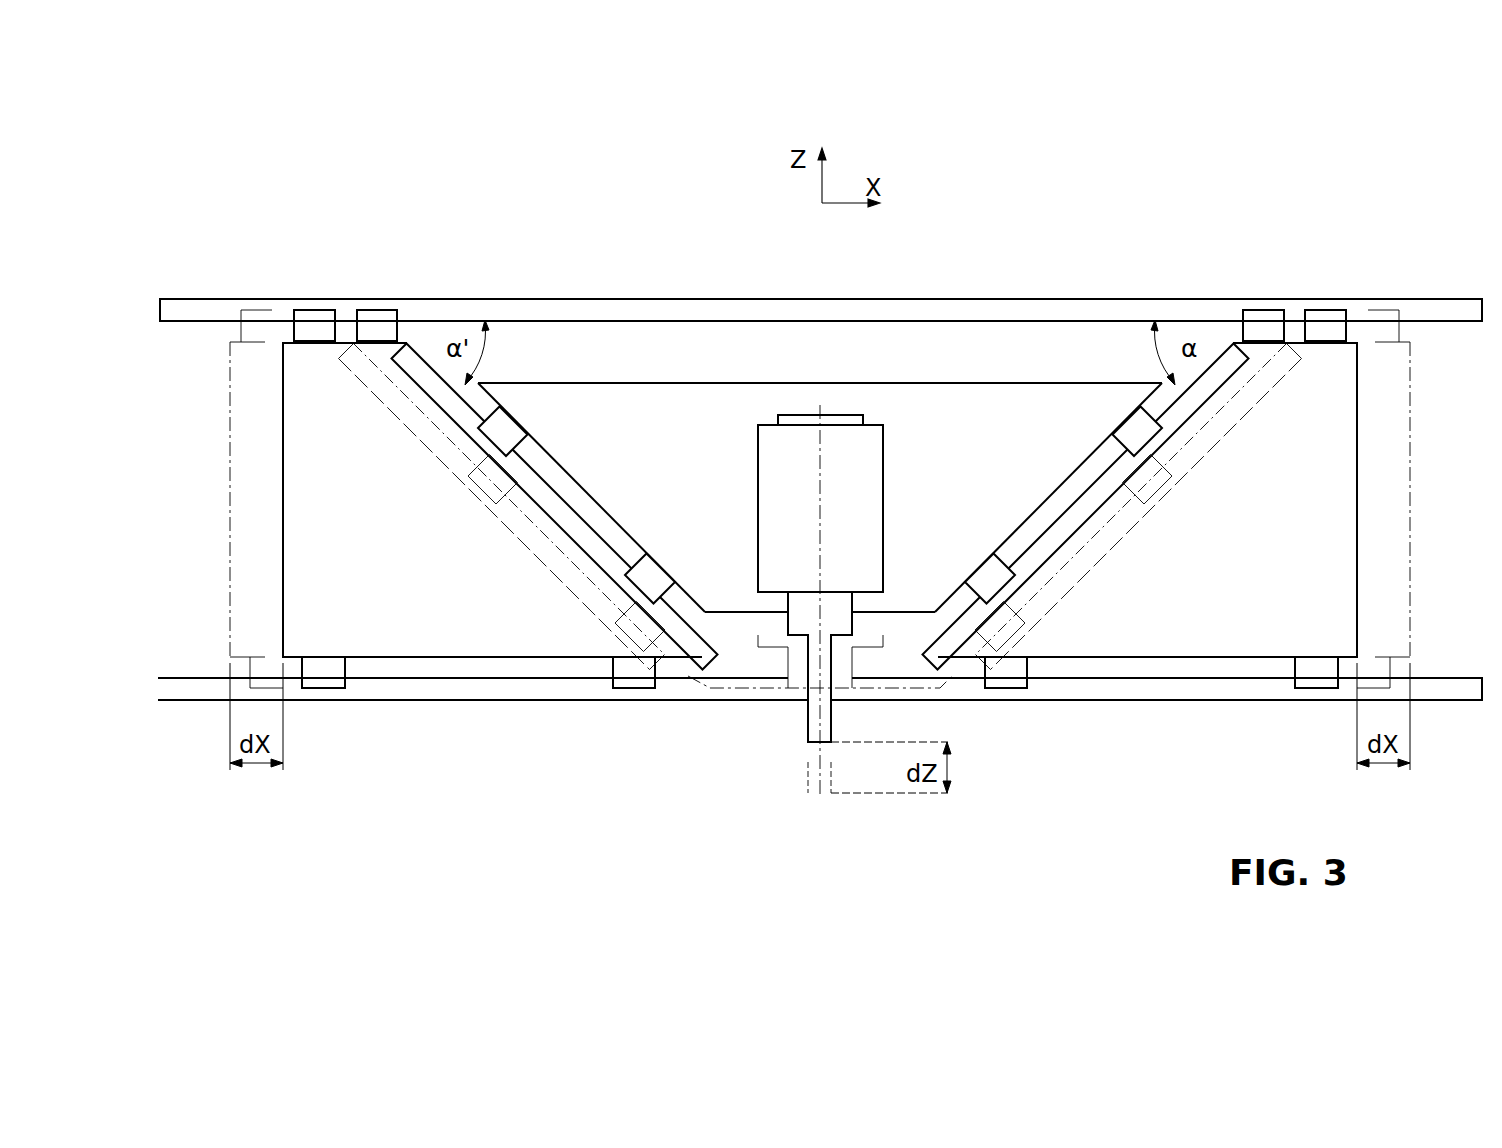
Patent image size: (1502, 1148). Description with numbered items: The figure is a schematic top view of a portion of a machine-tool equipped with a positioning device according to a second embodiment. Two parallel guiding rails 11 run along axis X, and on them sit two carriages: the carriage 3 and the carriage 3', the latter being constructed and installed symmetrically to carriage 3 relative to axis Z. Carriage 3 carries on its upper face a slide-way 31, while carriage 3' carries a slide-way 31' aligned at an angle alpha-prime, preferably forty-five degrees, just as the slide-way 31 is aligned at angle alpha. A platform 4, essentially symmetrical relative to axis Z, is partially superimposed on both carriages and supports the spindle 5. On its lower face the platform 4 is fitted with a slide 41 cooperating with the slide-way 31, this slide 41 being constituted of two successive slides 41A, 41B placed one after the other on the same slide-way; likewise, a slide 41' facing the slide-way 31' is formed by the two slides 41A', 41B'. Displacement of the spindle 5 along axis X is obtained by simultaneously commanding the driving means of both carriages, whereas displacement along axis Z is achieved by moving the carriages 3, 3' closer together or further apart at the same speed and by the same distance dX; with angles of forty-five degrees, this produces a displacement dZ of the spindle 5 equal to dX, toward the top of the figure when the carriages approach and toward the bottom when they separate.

The guiding rails 11 is at (188, 315).
The second carriage 3 is at (1174, 499).
The carriage 3' is at (466, 499).
The slide-way 31 is at (1124, 507).
The slide-way 31' is at (519, 507).
The platform 4 is at (820, 535).
The slide 41 is at (1048, 497).
The slide 41' is at (591, 497).
The slide 41A is at (967, 586).
The slide 41B is at (1109, 454).
The slide 41A' is at (668, 585).
The slide 41B' is at (542, 453).
The spindle 5 is at (820, 600).